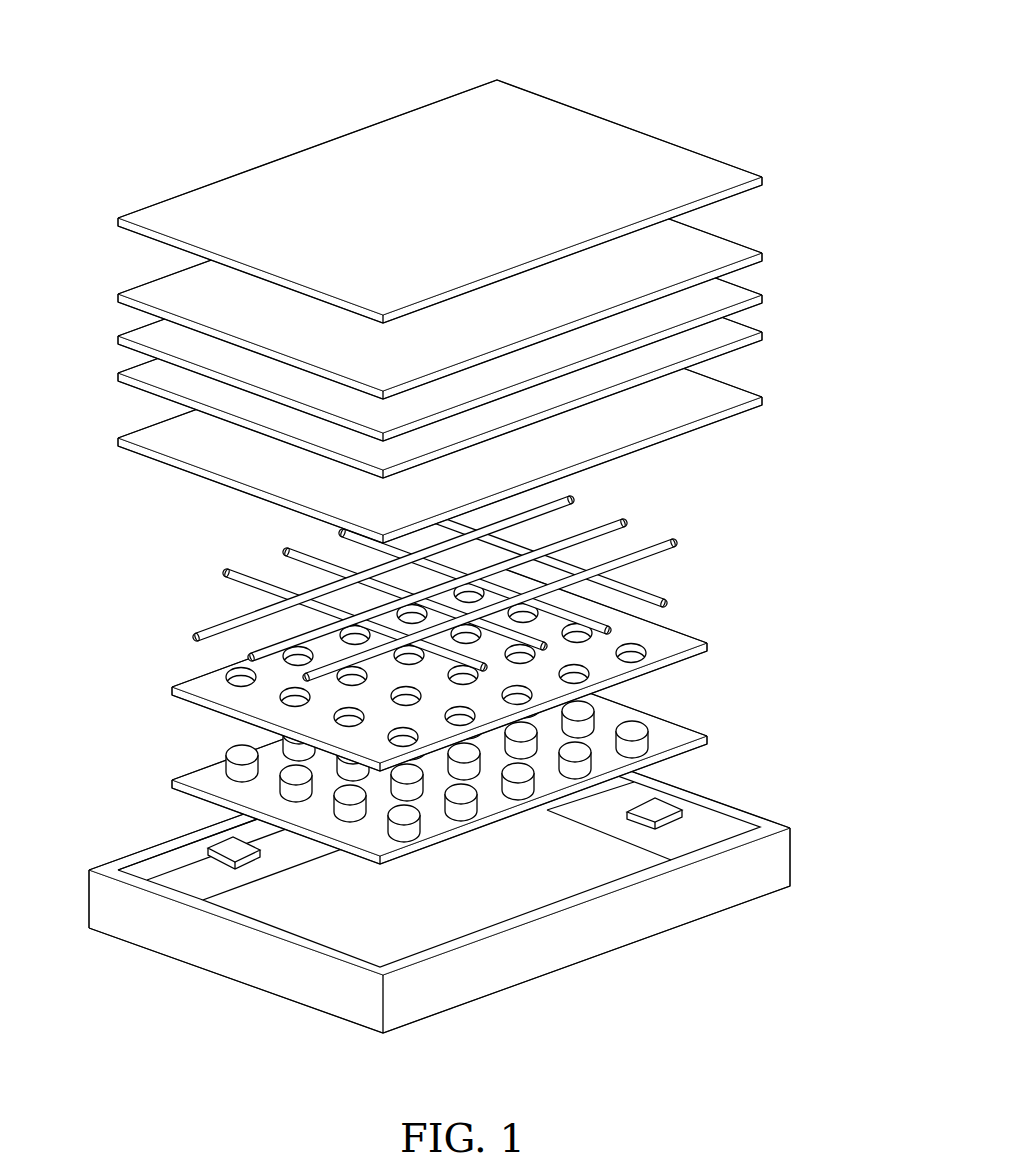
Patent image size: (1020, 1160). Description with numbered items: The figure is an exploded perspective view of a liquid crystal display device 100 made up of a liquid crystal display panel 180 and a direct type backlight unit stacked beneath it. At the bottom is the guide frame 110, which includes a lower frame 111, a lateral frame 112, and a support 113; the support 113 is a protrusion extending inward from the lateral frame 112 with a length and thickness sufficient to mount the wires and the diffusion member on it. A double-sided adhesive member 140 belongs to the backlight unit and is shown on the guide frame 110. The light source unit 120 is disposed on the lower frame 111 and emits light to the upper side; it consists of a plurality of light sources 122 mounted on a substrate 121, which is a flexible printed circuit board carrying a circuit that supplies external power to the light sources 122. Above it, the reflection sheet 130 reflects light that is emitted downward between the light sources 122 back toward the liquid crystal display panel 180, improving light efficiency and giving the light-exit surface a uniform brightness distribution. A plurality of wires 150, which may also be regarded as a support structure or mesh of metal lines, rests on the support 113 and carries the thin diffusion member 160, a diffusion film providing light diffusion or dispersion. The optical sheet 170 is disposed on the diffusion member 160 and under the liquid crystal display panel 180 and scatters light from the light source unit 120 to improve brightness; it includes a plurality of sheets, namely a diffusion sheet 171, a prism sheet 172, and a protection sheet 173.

The liquid crystal display device 100 is at (727, 33).
The guide frame 110 is at (417, 882).
The lower frame 111 is at (280, 916).
The lateral frame 112 is at (203, 905).
The support 113 is at (167, 880).
The light source unit 120 is at (516, 762).
The substrate 121 is at (697, 748).
The light sources 122 is at (643, 725).
The reflection sheet 130 is at (707, 645).
The double-sided adhesive member 140 is at (228, 848).
The wires 150 is at (675, 543).
The diffusion member 160 is at (732, 394).
The optical sheet 170 is at (513, 317).
The diffusion sheet 171 is at (758, 336).
The prism sheet 172 is at (758, 299).
The protection sheet 173 is at (758, 257).
The liquid crystal display panel 180 is at (732, 176).